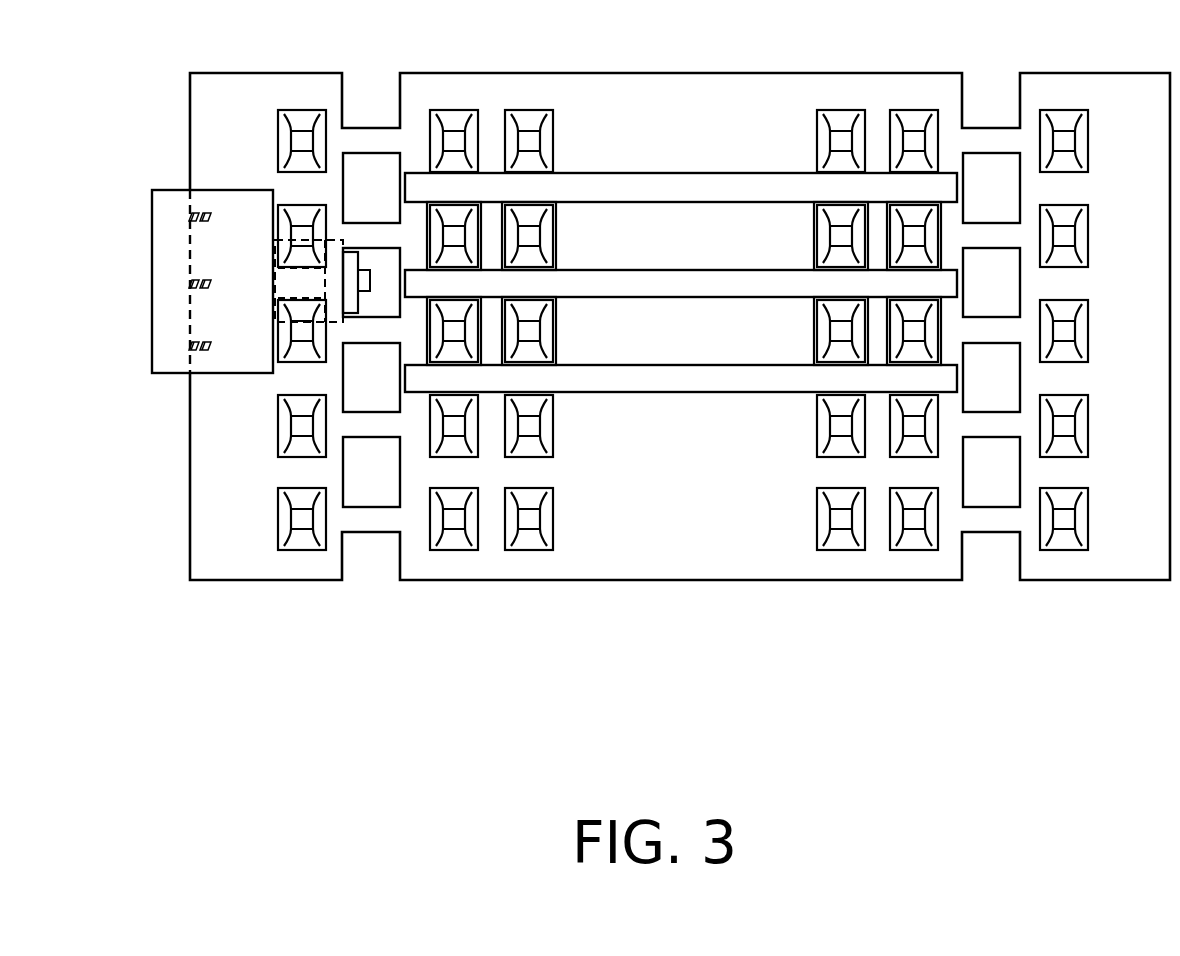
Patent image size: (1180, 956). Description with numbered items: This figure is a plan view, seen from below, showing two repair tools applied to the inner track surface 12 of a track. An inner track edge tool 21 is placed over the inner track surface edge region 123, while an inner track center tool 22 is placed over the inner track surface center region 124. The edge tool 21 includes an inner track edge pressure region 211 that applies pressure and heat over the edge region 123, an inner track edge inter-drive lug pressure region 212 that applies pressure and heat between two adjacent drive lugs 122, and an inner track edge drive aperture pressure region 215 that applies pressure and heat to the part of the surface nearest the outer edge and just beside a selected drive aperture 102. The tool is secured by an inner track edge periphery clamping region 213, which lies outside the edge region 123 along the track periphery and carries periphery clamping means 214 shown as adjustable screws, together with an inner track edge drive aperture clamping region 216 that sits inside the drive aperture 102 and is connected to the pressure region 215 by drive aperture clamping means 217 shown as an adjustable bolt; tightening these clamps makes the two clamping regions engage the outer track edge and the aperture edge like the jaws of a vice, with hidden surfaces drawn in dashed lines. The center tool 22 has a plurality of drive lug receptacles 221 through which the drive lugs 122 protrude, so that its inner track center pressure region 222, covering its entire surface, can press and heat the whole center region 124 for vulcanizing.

The inner track surface 12 is at (893, 638).
The drive aperture 102 is at (384, 285).
The drive lugs 122 is at (280, 362).
The inner track surface edge region 123 is at (265, 470).
The inner track surface center region 124 is at (690, 479).
The inner track edge tool 21 is at (256, 276).
The inner track edge pressure region 211 is at (233, 215).
The inner track edge inter-drive lug pressure region 212 is at (298, 283).
The inner track edge periphery clamping region 213 is at (170, 283).
The periphery clamping means 214 is at (192, 350).
The inner track edge drive aperture pressure region 215 is at (333, 283).
The inner track edge drive aperture clamping region 216 is at (347, 283).
The drive aperture clamping means 217 is at (366, 283).
The inner track center tool 22 is at (681, 290).
The drive lug receptacles 221 is at (878, 225).
The inner track center pressure region 222 is at (723, 337).